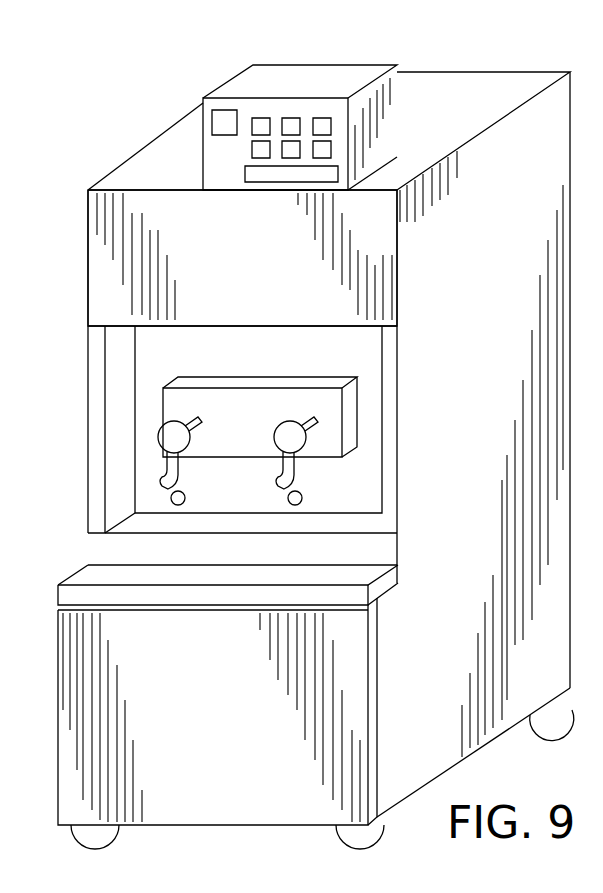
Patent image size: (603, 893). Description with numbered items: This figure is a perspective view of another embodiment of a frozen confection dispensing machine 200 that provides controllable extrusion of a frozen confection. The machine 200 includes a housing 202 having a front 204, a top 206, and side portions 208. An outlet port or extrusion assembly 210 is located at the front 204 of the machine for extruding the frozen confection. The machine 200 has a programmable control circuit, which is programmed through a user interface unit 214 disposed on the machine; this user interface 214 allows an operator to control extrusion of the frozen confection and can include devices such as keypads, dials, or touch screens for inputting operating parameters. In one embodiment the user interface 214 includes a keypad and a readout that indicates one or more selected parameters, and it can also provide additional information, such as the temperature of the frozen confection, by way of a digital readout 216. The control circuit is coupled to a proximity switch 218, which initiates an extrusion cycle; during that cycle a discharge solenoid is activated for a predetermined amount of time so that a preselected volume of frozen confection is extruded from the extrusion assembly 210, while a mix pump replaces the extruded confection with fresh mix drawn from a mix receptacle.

The frozen confection dispensing machine 200 is at (496, 40).
The housing 202 is at (130, 183).
The front 204 is at (264, 278).
The top 206 is at (514, 101).
The side portions 208 is at (538, 218).
The outlet port or extrusion assembly 210 is at (264, 418).
The user interface unit 214 is at (311, 96).
The digital readout 216 is at (214, 123).
The proximity switch 218 is at (302, 500).